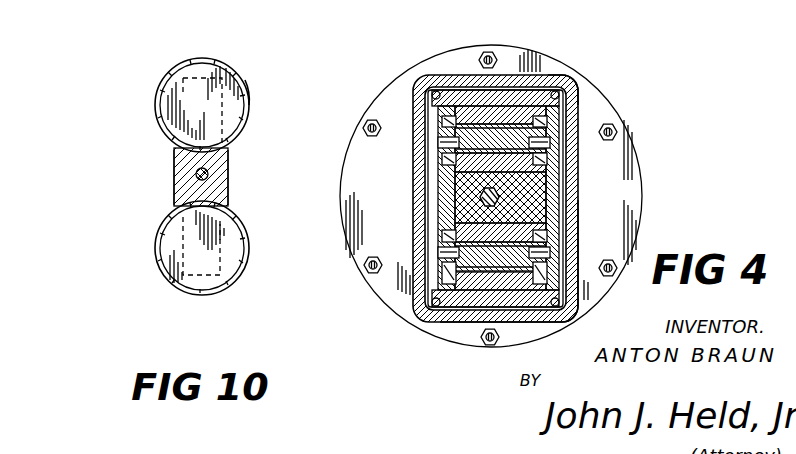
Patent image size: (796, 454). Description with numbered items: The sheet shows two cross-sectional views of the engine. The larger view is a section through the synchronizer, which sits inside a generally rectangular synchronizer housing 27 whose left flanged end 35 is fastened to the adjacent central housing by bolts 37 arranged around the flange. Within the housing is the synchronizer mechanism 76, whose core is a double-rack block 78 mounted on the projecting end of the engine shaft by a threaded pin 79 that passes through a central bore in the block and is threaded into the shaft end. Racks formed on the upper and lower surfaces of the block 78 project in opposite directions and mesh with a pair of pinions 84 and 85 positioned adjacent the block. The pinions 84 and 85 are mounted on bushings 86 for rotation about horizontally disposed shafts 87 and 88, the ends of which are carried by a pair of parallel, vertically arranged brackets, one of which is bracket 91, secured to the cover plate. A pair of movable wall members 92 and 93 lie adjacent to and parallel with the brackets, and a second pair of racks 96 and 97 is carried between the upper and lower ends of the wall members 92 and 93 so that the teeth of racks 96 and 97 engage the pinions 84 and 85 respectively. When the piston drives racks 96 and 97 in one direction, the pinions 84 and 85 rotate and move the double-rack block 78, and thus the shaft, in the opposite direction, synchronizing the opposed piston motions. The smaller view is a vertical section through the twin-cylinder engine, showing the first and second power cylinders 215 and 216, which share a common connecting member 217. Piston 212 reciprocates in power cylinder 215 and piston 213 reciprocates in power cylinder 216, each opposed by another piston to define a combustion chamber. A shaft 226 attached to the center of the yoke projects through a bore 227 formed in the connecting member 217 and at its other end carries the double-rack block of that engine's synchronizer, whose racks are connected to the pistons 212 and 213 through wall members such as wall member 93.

In FIG. 10, the piston 212 is at (200, 73).
In FIG. 10, the piston 213 is at (239, 265).
In FIG. 10, the first power cylinder 215 is at (266, 86).
In FIG. 10, the second power cylinder 216 is at (158, 298).
In FIG. 10, the connecting member 217 is at (231, 165).
In FIG. 10, the shaft 226 is at (232, 178).
In FIG. 10, the bore 227 is at (197, 176).
In FIG. 4, the synchronizer housing 27 is at (417, 70).
In FIG. 4, the left flanged end 35 is at (563, 73).
In FIG. 4, the bolts 37 is at (500, 52).
In FIG. 4, the synchronizer mechanism 76 is at (572, 285).
In FIG. 4, the double-rack block 78 is at (458, 210).
In FIG. 4, the threaded pin 79 is at (484, 196).
In FIG. 4, the pinion 84 is at (557, 99).
In FIG. 4, the pinion 85 is at (456, 306).
In FIG. 4, the bushings 86 is at (447, 172).
In FIG. 4, the shaft 87 is at (547, 158).
In FIG. 4, the shaft 88 is at (446, 256).
In FIG. 4, the bracket 91 is at (556, 210).
In FIG. 4, the movable wall member 92 is at (431, 117).
In FIG. 4, the movable wall member 93 is at (560, 190).
In FIG. 4, the rack 96 is at (470, 94).
In FIG. 4, the rack 97 is at (470, 298).